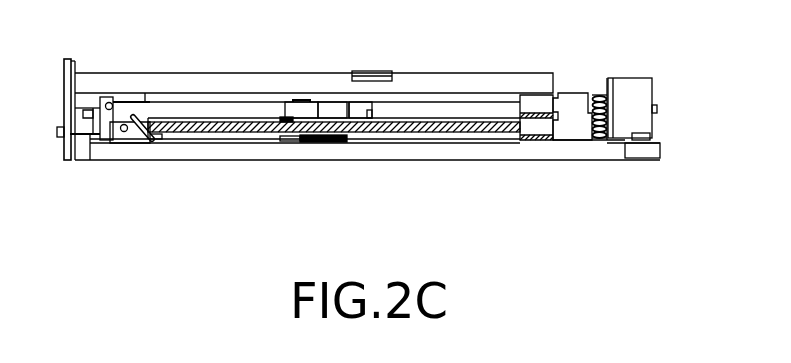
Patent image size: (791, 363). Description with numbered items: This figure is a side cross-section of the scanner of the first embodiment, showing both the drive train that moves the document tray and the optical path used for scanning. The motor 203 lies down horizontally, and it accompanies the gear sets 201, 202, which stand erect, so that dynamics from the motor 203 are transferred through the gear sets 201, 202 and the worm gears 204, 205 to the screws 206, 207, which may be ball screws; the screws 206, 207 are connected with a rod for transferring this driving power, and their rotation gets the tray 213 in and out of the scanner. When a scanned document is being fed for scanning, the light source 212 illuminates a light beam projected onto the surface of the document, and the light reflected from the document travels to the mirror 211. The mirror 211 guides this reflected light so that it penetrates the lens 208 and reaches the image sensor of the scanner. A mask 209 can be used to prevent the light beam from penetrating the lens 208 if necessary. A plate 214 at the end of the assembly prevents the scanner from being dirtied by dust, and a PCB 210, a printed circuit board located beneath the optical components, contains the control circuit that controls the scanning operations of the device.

The gear set 201 is at (598, 97).
The gear set 202 is at (608, 100).
The motor 203 is at (645, 90).
The worm gear 204 is at (610, 107).
The worm gear 205 is at (606, 141).
The screw 206 is at (505, 141).
The screw 207 is at (541, 141).
The lens 208 is at (327, 142).
The mask 209 is at (307, 139).
The PCB 210 is at (245, 142).
The mirror 211 is at (150, 138).
The light source 212 is at (112, 94).
The tray 213 is at (207, 86).
The plate 214 is at (74, 59).